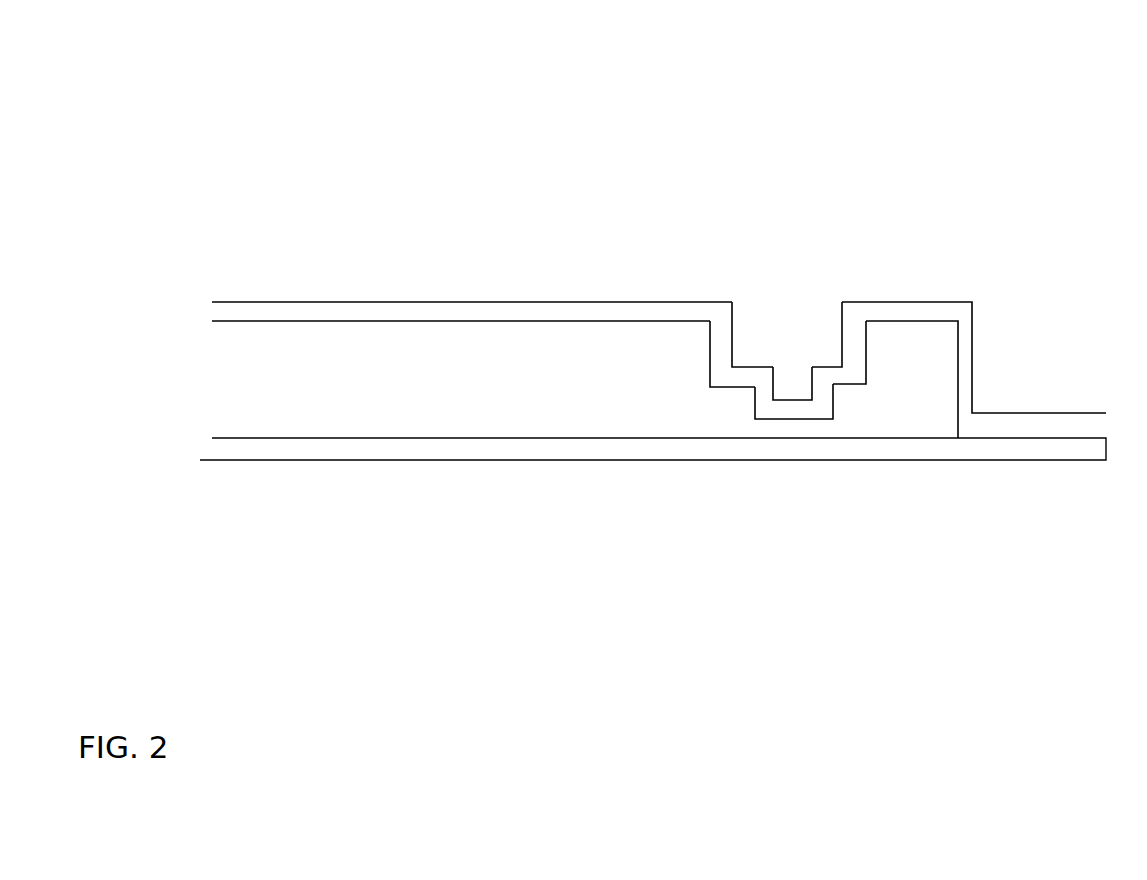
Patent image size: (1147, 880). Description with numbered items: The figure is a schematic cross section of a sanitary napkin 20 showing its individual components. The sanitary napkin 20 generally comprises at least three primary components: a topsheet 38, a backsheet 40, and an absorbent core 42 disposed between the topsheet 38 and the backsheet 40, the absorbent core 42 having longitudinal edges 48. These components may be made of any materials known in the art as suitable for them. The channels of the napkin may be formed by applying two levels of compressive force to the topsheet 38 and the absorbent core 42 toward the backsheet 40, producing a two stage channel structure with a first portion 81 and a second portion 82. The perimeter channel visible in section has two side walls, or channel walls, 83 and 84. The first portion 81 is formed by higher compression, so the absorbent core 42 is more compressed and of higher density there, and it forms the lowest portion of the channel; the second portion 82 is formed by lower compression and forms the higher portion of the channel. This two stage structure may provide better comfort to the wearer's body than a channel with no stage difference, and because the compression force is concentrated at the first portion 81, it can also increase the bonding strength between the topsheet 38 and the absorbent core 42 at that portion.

The sanitary napkin 20 is at (1034, 199).
The topsheet 38 is at (269, 314).
The backsheet 40 is at (540, 455).
The absorbent core 42 is at (270, 417).
The longitudinal edges 48 is at (959, 371).
The first portion 81 is at (793, 403).
The second portion 82 is at (836, 372).
The side wall 83 is at (732, 327).
The side wall 84 is at (843, 330).